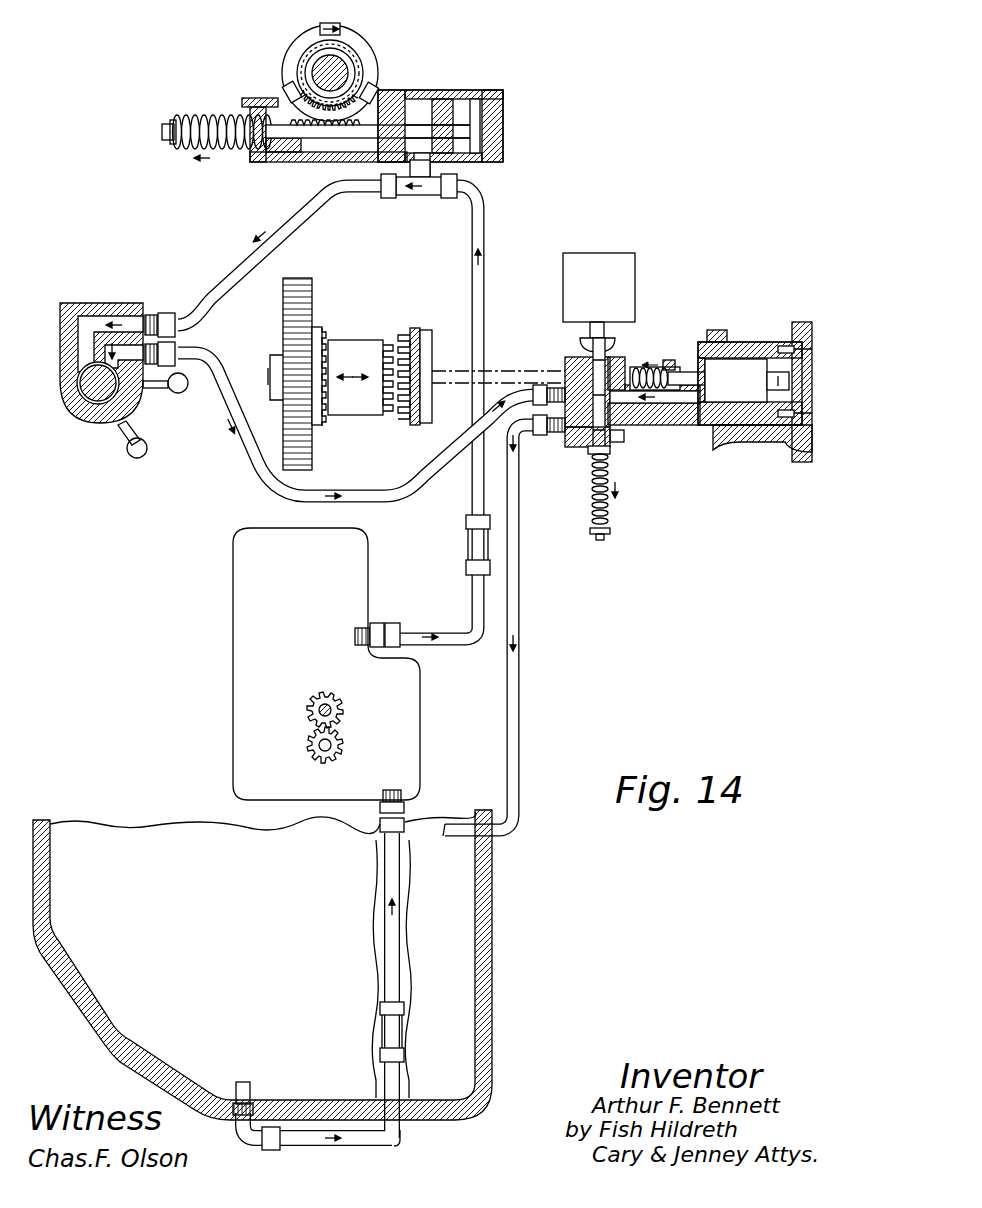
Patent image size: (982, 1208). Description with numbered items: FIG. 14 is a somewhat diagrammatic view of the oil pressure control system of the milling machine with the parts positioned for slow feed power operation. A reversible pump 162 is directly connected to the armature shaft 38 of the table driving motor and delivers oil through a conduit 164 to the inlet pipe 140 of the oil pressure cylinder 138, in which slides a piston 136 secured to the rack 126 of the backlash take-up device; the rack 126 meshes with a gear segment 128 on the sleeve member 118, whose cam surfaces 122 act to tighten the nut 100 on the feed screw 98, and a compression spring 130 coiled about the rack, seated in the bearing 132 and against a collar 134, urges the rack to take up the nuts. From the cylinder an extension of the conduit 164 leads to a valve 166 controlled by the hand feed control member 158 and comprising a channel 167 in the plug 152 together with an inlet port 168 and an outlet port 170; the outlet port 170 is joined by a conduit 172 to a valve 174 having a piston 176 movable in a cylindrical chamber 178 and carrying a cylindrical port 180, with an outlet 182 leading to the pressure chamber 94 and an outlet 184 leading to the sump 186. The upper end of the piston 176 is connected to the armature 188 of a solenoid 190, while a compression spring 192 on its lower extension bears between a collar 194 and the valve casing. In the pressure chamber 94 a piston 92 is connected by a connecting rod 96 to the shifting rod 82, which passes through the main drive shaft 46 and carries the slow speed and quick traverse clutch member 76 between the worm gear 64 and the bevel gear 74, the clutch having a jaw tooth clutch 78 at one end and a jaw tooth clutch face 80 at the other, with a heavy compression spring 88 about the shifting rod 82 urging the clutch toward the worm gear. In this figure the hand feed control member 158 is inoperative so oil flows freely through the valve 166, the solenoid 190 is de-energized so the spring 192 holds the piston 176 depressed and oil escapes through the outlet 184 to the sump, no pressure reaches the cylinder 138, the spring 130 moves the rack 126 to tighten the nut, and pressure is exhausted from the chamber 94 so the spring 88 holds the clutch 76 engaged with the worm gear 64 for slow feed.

The armature shaft 38 is at (336, 702).
The main drive shaft 46 is at (395, 367).
The worm gear 64 is at (300, 286).
The bevel gear 74 is at (415, 335).
The slow speed and quick traverse clutch member 76 is at (360, 323).
The jaw tooth clutch 78 is at (318, 420).
The jaw tooth clutch face 80 is at (390, 420).
The shifting rod 82 is at (466, 352).
The compression spring 88 is at (667, 360).
The piston 92 is at (747, 380).
The pressure chamber 94 is at (742, 342).
The connecting rod 96 is at (690, 372).
The feed screw 98 is at (347, 72).
The nut 100 is at (358, 50).
The sleeve member 118 is at (352, 42).
The cam surfaces 122 is at (320, 28).
The rack 126 is at (297, 162).
The gear segment 128 is at (333, 140).
The compression spring 130 is at (187, 116).
The bearing 132 is at (290, 112).
The collar 134 is at (174, 142).
The piston 136 is at (466, 150).
The oil pressure cylinder 138 is at (416, 92).
The inlet pipe 140 is at (425, 165).
The plug 152 is at (118, 425).
The hand feed control member 158 is at (165, 389).
The reversible pump 162 is at (245, 650).
The conduit 164 is at (302, 222).
The valve 166 is at (62, 333).
The channel 167 is at (102, 368).
The inlet port 168 is at (92, 330).
The outlet port 170 is at (123, 350).
The conduit 172 is at (205, 368).
The valve 174 is at (580, 448).
The piston 176 is at (580, 365).
The cylindrical chamber 178 is at (607, 360).
The cylindrical port 180 is at (624, 433).
The outlet 182 is at (676, 404).
The outlet 184 is at (516, 702).
The sump 186 is at (493, 950).
The armature 188 is at (590, 328).
The solenoid 190 is at (570, 285).
The compression spring 192 is at (593, 525).
The collar 194 is at (610, 532).